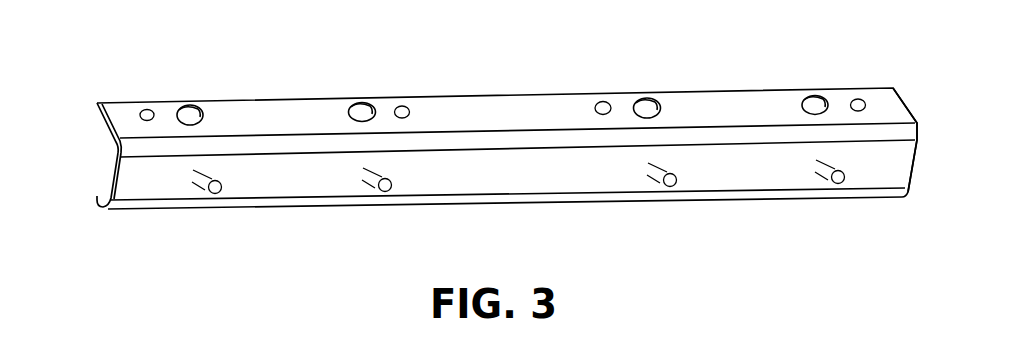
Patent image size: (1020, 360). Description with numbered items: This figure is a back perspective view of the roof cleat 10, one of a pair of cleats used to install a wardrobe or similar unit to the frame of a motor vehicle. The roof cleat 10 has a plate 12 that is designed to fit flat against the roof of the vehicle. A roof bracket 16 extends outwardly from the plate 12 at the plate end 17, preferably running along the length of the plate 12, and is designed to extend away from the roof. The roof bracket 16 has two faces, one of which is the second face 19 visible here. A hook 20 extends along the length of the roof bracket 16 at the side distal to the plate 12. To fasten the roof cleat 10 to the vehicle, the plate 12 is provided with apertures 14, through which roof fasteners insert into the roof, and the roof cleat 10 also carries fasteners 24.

The roof cleat 10 is at (307, 98).
The plate 12 is at (507, 107).
The aperture 14 is at (658, 98).
The roof bracket 16 is at (138, 175).
The plate end 17 is at (110, 150).
The second face 19 is at (883, 175).
The hook 20 is at (98, 210).
The fastener 24 is at (203, 192).